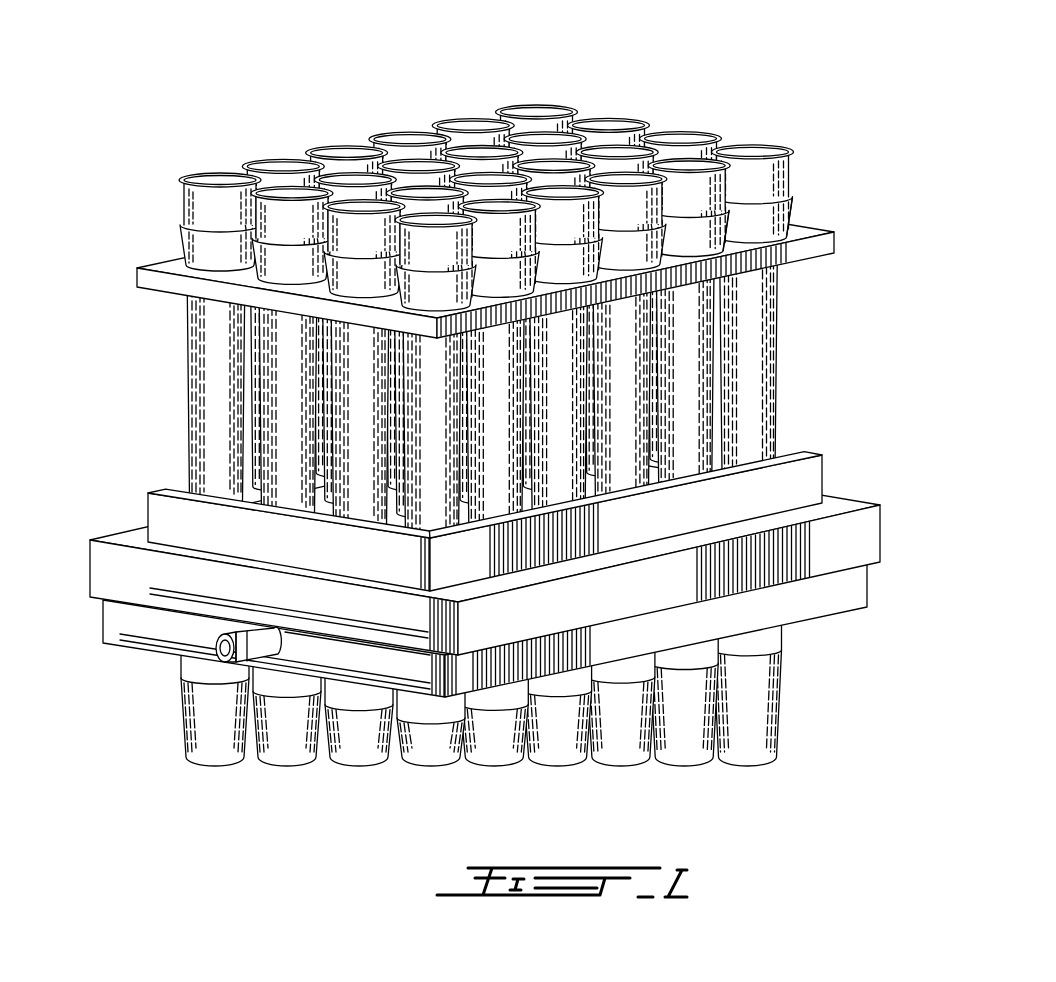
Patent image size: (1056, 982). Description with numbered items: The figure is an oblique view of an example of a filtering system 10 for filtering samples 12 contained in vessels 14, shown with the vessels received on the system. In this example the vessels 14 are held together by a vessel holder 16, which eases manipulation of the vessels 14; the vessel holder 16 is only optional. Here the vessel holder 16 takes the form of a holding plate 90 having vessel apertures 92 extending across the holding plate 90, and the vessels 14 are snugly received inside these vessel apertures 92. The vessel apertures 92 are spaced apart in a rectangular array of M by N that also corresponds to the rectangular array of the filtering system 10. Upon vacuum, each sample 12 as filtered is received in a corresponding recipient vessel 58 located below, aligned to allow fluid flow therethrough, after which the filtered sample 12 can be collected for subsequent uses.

The filtering system 10 is at (568, 432).
The sample 12 is at (743, 435).
The vessel 14 is at (358, 167).
The vessel holder 16 is at (838, 242).
The recipient vessel 58 is at (752, 733).
The holding plate 90 is at (833, 240).
The vessel apertures 92 is at (752, 235).